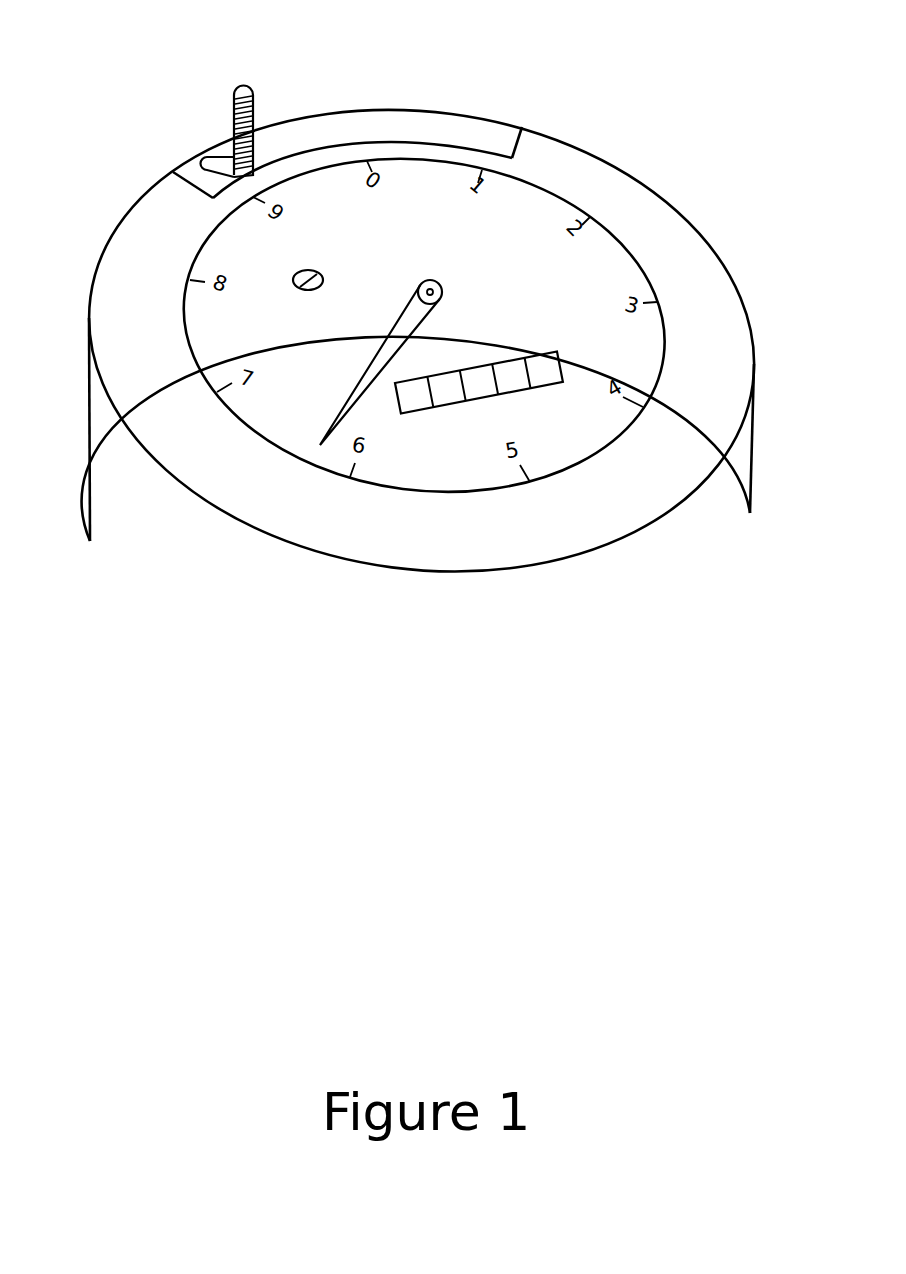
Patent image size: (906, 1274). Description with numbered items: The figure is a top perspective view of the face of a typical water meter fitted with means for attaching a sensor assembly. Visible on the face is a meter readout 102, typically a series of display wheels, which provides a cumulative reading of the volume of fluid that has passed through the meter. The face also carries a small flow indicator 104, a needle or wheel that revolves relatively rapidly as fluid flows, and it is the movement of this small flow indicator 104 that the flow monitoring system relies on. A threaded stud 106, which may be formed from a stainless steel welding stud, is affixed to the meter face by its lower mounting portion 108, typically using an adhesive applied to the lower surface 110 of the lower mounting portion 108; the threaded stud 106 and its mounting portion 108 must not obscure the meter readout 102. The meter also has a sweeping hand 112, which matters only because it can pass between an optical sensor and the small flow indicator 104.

The meter readout 102 is at (538, 352).
The small flow indicator 104 is at (301, 270).
The threaded stud 106 is at (243, 86).
The lower mounting portion 108 is at (215, 160).
The lower surface 110 is at (203, 187).
The sweeping hand 112 is at (413, 300).